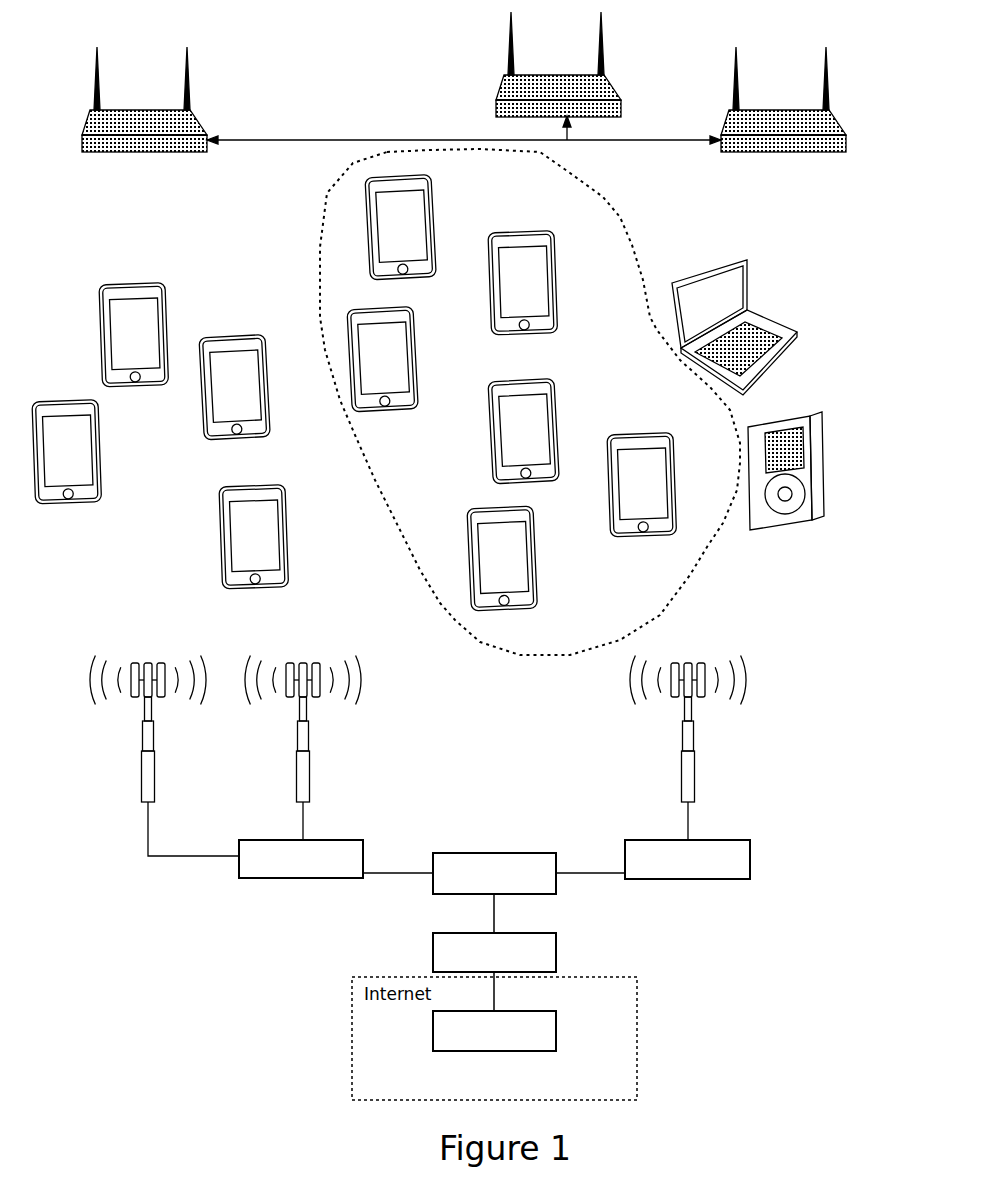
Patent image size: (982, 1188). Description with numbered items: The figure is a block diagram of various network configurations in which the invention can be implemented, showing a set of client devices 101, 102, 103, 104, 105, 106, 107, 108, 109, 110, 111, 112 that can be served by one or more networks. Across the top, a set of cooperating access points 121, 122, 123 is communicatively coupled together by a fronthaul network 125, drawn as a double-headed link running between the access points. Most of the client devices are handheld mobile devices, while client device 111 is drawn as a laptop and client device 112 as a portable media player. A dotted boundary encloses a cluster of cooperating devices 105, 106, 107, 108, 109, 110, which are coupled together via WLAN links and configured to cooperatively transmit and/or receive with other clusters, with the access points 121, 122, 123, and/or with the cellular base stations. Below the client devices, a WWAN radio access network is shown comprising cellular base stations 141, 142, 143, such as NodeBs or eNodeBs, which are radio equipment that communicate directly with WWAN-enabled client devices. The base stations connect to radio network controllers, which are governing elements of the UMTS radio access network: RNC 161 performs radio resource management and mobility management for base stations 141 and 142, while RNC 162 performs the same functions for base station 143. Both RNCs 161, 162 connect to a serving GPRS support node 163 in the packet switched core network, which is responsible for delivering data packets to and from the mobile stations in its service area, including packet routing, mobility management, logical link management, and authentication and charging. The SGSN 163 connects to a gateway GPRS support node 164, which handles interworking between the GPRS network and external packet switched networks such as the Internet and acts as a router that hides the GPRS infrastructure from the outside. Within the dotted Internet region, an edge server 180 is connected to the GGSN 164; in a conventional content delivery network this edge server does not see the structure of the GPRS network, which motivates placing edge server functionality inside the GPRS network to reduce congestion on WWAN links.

The client device 101 is at (97, 411).
The client device 102 is at (165, 293).
The client device 103 is at (267, 344).
The client device 104 is at (285, 493).
The cooperating client device 105 is at (432, 186).
The cooperating client device 106 is at (412, 315).
The cooperating client device 107 is at (552, 240).
The cooperating client device 108 is at (554, 386).
The cooperating client device 109 is at (534, 515).
The cooperating client device 110 is at (674, 441).
The client device 111 is at (746, 261).
The client device 112 is at (804, 414).
The cooperating access point 121 is at (120, 106).
The cooperating access point 122 is at (534, 71).
The cooperating access point 123 is at (757, 106).
The fronthaul network 125 is at (295, 135).
The cellular base station 141 is at (160, 654).
The cellular base station 142 is at (314, 654).
The cellular base station 143 is at (700, 654).
The radio network controller 161 is at (357, 840).
The radio network controller 162 is at (742, 840).
The serving GPRS support node 163 is at (550, 853).
The gateway GPRS support node 164 is at (550, 933).
The edge server 180 is at (550, 1011).